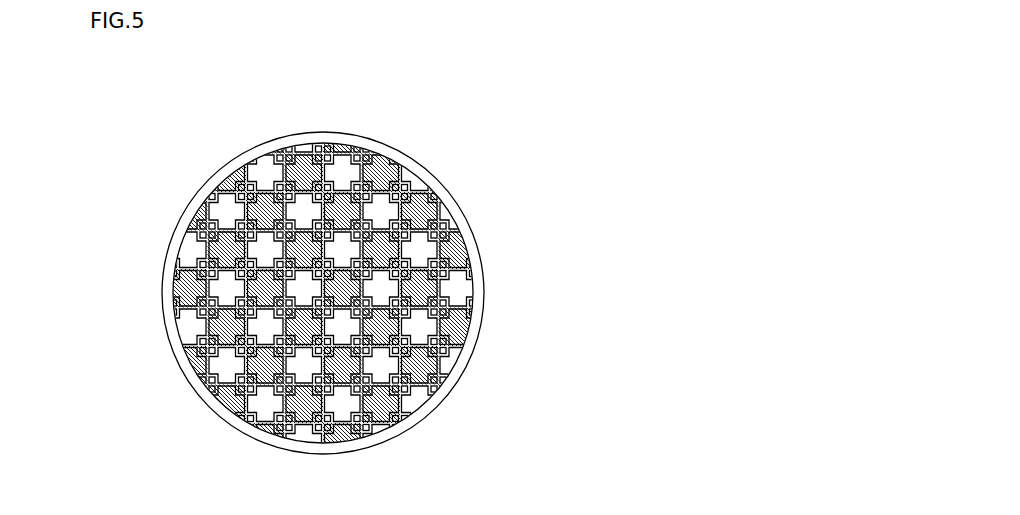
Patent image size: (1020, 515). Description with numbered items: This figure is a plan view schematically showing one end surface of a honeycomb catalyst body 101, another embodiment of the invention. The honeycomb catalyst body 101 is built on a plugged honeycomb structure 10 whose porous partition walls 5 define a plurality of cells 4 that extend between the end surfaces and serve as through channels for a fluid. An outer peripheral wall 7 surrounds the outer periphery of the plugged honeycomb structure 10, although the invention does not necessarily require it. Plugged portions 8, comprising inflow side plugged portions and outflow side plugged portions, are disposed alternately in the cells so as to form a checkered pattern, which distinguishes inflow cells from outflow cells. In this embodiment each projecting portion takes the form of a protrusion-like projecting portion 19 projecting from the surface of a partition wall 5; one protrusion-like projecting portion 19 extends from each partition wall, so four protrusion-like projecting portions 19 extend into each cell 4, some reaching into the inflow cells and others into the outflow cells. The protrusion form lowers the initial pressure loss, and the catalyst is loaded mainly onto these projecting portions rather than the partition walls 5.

The honeycomb catalyst body 101 is at (560, 103).
The plugged honeycomb structure 10 is at (484, 333).
The outer peripheral wall 7 is at (322, 133).
The partition wall 5 is at (442, 295).
The cell 4 is at (383, 212).
The plugged portion 8 is at (346, 353).
The protrusion-like projecting portion 19 is at (433, 238).